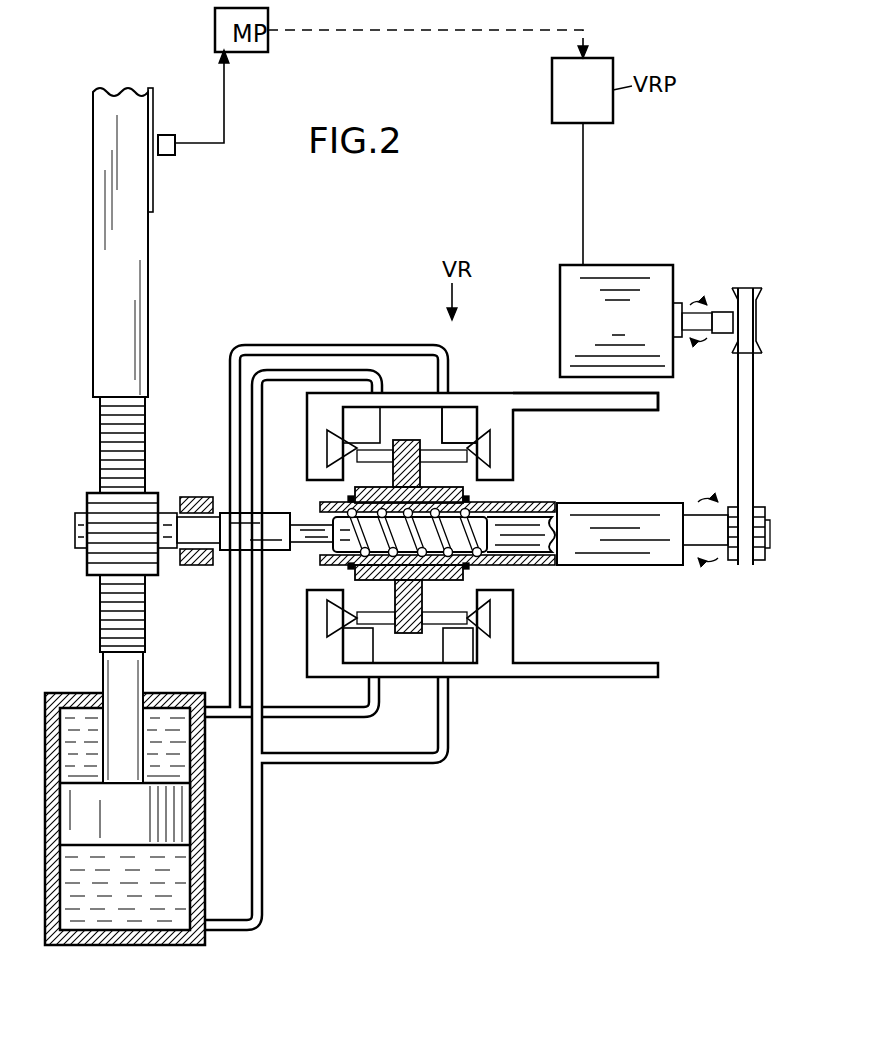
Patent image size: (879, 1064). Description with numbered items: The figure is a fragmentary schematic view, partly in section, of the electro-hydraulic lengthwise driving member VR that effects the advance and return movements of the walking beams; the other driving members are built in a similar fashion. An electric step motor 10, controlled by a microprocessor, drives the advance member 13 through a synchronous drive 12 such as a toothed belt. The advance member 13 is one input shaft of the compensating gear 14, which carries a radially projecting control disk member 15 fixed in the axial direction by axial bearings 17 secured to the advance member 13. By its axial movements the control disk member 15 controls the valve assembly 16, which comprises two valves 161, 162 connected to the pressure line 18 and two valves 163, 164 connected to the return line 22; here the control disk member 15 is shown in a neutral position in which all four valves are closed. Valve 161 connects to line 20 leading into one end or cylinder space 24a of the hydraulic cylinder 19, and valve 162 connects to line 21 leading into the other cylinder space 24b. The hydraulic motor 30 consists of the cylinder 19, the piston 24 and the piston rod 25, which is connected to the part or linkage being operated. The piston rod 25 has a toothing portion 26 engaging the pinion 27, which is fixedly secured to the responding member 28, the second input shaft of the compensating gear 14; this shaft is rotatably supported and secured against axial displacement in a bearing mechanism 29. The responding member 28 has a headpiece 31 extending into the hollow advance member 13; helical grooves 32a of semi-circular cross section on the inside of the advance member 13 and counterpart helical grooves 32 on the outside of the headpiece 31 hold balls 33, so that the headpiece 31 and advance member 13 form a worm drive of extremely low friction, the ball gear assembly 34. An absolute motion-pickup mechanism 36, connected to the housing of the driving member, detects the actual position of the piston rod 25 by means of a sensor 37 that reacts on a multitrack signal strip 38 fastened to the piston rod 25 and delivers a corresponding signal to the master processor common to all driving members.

The electric step motor 10 is at (640, 283).
The synchronous drive 12 is at (742, 410).
The advance member 13 is at (605, 520).
The compensating gear 14 is at (433, 528).
The control disk member 15 is at (407, 445).
The valve assembly 16 is at (463, 431).
The axial bearings 17 is at (352, 500).
The pressure line 18 is at (608, 672).
The hydraulic cylinder 19 is at (55, 925).
The line 20 is at (258, 853).
The line 21 is at (220, 703).
The return line 22 is at (595, 402).
The piston 24 is at (78, 833).
The cylinder space 24a is at (140, 912).
The cylinder space 24b is at (173, 757).
The piston rod 25 is at (103, 278).
The toothing portion 26 is at (115, 460).
The pinion 27 is at (150, 497).
The responding member 28 is at (242, 590).
The bearing mechanism 29 is at (200, 560).
The hydraulic motor 30 is at (133, 818).
The headpiece 31 is at (470, 570).
The helical grooves 32 is at (487, 545).
The helical grooves 32a is at (340, 515).
The balls 33 is at (372, 585).
The ball gear assembly 34 is at (502, 506).
The absolute motion-pickup mechanism 36 is at (187, 129).
The sensor 37 is at (172, 152).
The multitrack signal strip 38 is at (153, 200).
The valve 161 is at (483, 615).
The valve 162 is at (335, 620).
The valve 163 is at (327, 447).
The valve 164 is at (490, 445).